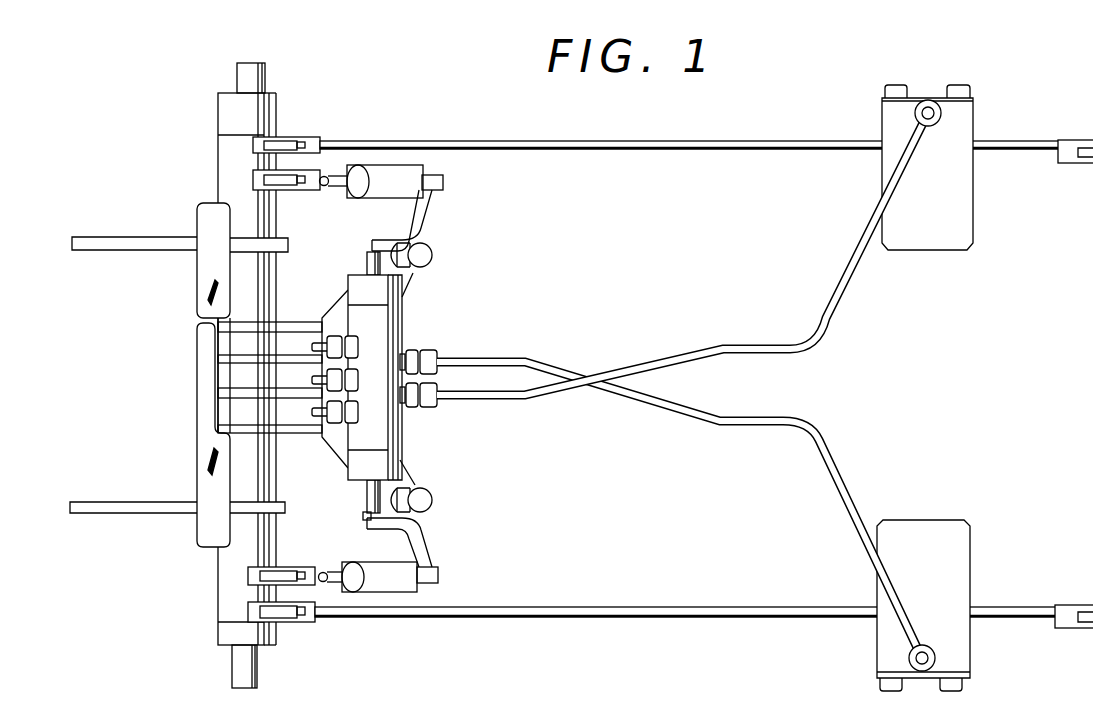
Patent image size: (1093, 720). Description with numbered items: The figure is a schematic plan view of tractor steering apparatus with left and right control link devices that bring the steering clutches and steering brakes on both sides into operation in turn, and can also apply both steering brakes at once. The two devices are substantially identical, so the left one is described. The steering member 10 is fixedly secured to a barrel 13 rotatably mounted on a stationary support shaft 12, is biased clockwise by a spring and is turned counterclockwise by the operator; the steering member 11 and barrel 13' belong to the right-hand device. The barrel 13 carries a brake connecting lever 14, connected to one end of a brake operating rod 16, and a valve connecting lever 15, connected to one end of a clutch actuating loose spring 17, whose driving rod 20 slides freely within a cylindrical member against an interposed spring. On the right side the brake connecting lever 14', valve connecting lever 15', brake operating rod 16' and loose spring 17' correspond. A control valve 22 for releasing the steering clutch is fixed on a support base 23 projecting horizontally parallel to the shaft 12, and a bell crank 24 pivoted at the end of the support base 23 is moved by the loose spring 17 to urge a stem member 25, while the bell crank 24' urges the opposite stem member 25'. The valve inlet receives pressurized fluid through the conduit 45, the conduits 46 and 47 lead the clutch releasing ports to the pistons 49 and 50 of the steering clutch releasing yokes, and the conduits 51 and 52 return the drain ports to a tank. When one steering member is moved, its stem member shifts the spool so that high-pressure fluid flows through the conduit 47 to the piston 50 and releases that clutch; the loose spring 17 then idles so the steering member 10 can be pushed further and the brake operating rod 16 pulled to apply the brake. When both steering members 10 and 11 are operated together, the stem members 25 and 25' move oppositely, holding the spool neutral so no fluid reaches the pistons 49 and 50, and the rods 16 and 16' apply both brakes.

The steering member 10 is at (203, 453).
The steering member 11 is at (206, 298).
The stationary support shaft 12 is at (258, 665).
The barrel 13 is at (268, 369).
The barrel 13' is at (229, 221).
The brake connecting lever 14 is at (250, 604).
The brake connecting lever 14' is at (289, 127).
The valve connecting lever 15 is at (250, 568).
The valve connecting lever 15' is at (286, 198).
The brake operating rod 16 is at (704, 638).
The brake operating rod 16' is at (706, 125).
The loose spring 17 is at (390, 561).
The loose spring 17' is at (401, 175).
The driving rod 20 is at (333, 570).
The control valve 22 is at (400, 437).
The support base 23 is at (335, 312).
The bell crank 24 is at (421, 513).
The bell crank 24' is at (426, 243).
The stem member 25 is at (350, 500).
The stem member 25' is at (355, 252).
The conduit 45 is at (312, 381).
The conduit 46 is at (528, 400).
The conduit 47 is at (526, 367).
The piston 49 is at (962, 236).
The piston 50 is at (962, 562).
The conduit 51 is at (312, 348).
The conduit 52 is at (312, 413).